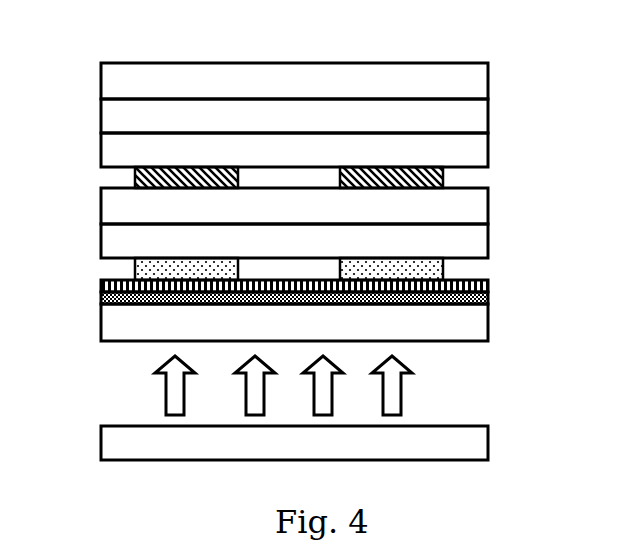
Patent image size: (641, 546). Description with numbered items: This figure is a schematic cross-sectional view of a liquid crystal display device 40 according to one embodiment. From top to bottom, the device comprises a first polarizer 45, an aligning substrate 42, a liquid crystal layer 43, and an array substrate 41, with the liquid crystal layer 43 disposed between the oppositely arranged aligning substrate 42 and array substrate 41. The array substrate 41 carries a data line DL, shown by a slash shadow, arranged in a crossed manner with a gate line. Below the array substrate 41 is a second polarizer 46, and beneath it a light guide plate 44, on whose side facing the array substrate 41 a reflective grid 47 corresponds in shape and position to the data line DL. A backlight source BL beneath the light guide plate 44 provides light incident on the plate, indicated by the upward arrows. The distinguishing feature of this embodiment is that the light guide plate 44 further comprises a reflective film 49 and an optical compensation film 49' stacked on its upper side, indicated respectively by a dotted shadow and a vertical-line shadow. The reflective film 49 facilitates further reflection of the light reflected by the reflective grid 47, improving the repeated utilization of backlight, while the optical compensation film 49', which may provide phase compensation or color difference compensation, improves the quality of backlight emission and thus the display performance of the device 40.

The liquid crystal display device 40 is at (293, 200).
The first polarizer 45 is at (294, 81).
The aligning substrate 42 is at (294, 116).
The liquid crystal layer 43 is at (294, 150).
The array substrate 41 is at (294, 206).
The second polarizer 46 is at (294, 241).
The light guide plate 44 is at (294, 322).
The reflective grid 47 is at (180, 270).
The reflective film 49 is at (332, 336).
The optical compensation film 49' is at (342, 262).
The data line DL is at (443, 179).
The backlight source BL is at (294, 443).